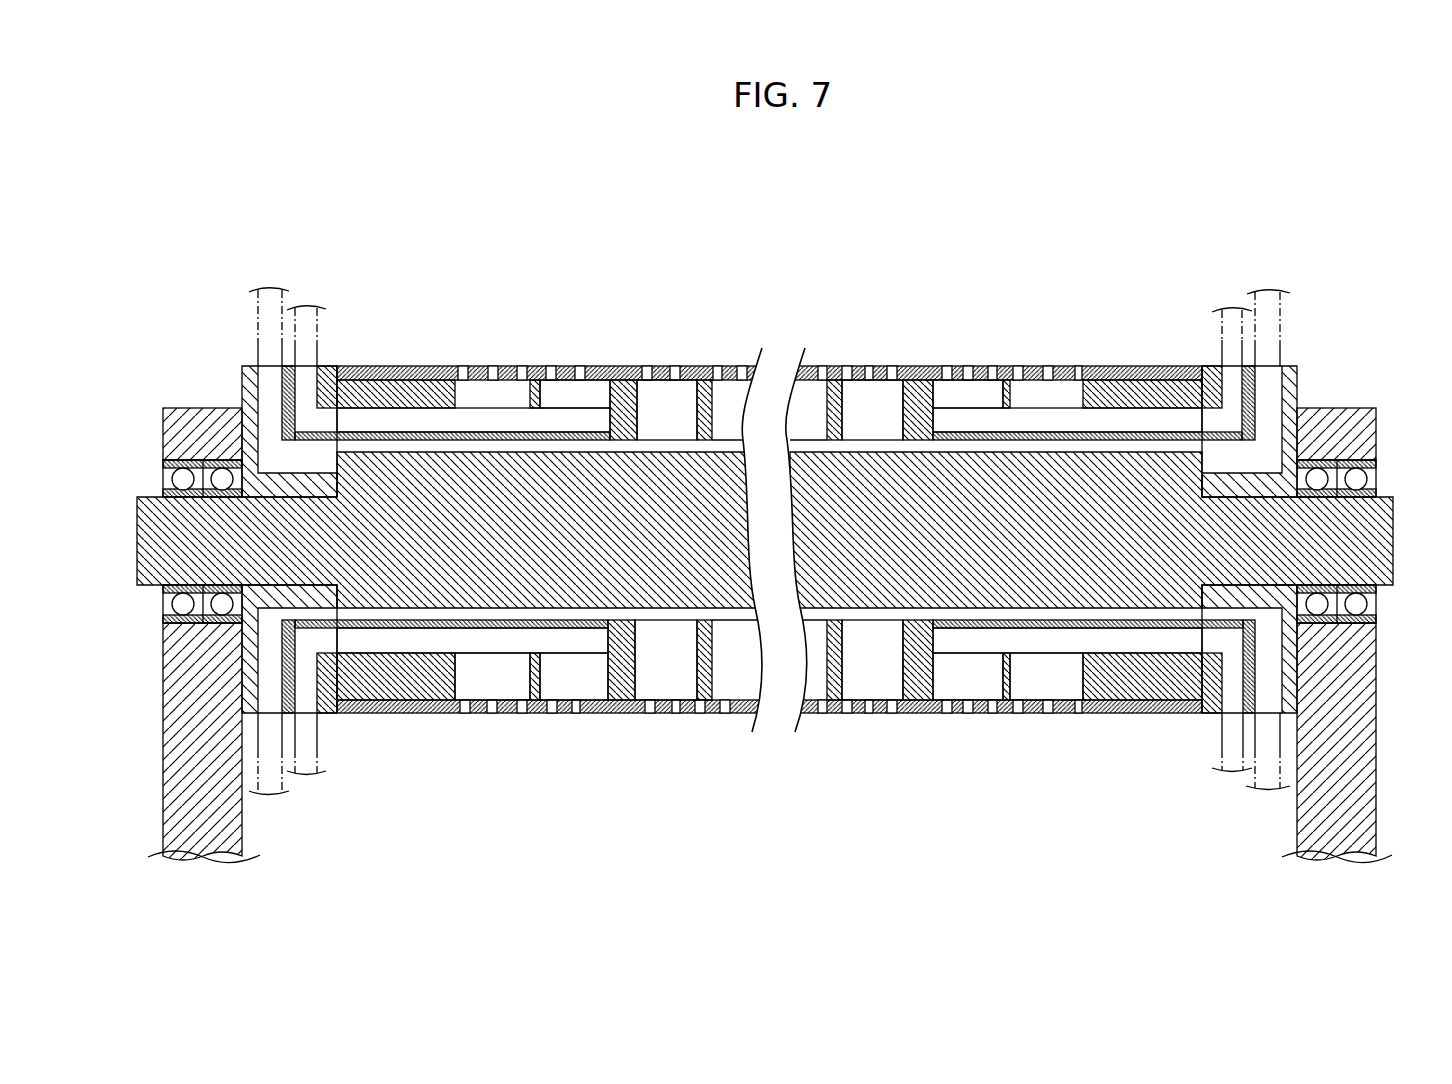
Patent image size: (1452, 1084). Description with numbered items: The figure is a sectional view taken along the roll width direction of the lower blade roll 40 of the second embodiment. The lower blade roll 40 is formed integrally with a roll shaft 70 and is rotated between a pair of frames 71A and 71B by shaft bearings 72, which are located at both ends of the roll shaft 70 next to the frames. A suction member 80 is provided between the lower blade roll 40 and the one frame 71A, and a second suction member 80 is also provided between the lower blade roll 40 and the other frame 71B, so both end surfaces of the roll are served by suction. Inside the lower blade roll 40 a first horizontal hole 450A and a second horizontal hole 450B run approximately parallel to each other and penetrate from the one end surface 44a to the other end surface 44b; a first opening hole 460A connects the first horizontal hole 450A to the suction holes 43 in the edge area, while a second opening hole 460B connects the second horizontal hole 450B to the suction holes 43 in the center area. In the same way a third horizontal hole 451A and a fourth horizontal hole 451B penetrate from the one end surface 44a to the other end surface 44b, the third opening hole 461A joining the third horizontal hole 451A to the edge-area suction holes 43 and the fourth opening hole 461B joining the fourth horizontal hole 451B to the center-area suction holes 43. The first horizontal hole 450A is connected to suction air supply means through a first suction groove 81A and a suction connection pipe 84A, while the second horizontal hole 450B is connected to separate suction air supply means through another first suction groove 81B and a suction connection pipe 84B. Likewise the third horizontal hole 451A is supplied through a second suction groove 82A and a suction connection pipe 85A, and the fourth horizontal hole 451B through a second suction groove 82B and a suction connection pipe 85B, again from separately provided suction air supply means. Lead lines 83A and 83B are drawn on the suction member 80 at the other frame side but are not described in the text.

The lower blade roll 40 is at (1158, 190).
The suction holes 43 is at (490, 392).
The one end surface 44a is at (337, 364).
The other end surface 44b is at (1205, 364).
The roll shaft 70 is at (890, 560).
The frame 71A is at (210, 838).
The frame 71B is at (1345, 840).
The shaft bearings 72 is at (166, 482).
The suction member 80 is at (774, 386).
The first suction groove 81A is at (305, 388).
The first suction groove 81B is at (268, 400).
The second suction groove 82A is at (306, 690).
The second suction groove 82B is at (262, 680).
The lead wire 83A is at (1224, 308).
The lead wire 83B is at (1264, 291).
The suction connection pipe 84A is at (306, 307).
The suction connection pipe 84B is at (262, 289).
The suction connection pipe 85A is at (314, 775).
The suction connection pipe 85B is at (278, 795).
The first horizontal hole 450A is at (423, 420).
The second horizontal hole 450B is at (722, 445).
The third horizontal hole 451A is at (472, 640).
The fourth horizontal hole 451B is at (385, 670).
The first opening hole 460A is at (570, 393).
The second opening hole 460B is at (672, 398).
The third opening hole 461A is at (570, 697).
The fourth opening hole 461B is at (660, 670).